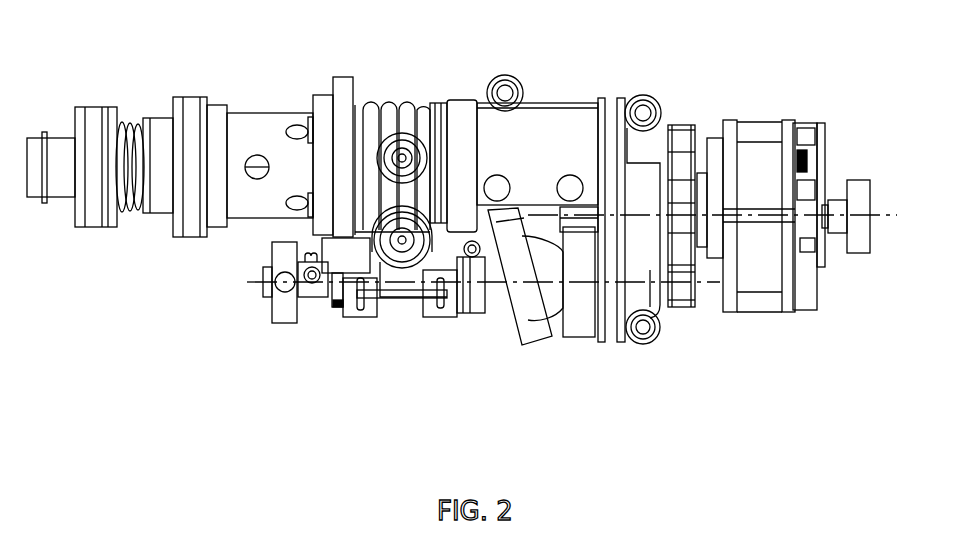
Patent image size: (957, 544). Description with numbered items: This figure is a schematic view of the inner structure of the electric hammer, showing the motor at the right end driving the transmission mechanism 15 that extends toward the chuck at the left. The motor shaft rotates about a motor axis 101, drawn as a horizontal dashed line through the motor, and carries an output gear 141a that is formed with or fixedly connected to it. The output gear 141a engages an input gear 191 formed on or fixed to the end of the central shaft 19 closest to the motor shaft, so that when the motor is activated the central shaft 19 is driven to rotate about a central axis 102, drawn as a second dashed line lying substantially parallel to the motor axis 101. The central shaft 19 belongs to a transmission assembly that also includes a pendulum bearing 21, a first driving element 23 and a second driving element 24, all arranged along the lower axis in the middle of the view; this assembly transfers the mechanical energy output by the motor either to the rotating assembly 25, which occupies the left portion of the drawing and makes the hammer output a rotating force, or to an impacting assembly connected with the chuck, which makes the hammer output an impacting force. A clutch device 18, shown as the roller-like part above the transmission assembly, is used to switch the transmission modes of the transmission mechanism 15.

The rotating assembly 25 is at (272, 140).
The central shaft 19 is at (310, 298).
The first driving element 23 is at (338, 304).
The clutch device 18 is at (408, 264).
The pendulum bearing 21 is at (495, 284).
The second driving element 24 is at (461, 315).
The transmission mechanism 15 is at (438, 329).
The input gear 191 is at (582, 300).
The output gear 141a is at (590, 220).
The motor axis 101 is at (883, 222).
The central axis 102 is at (843, 292).